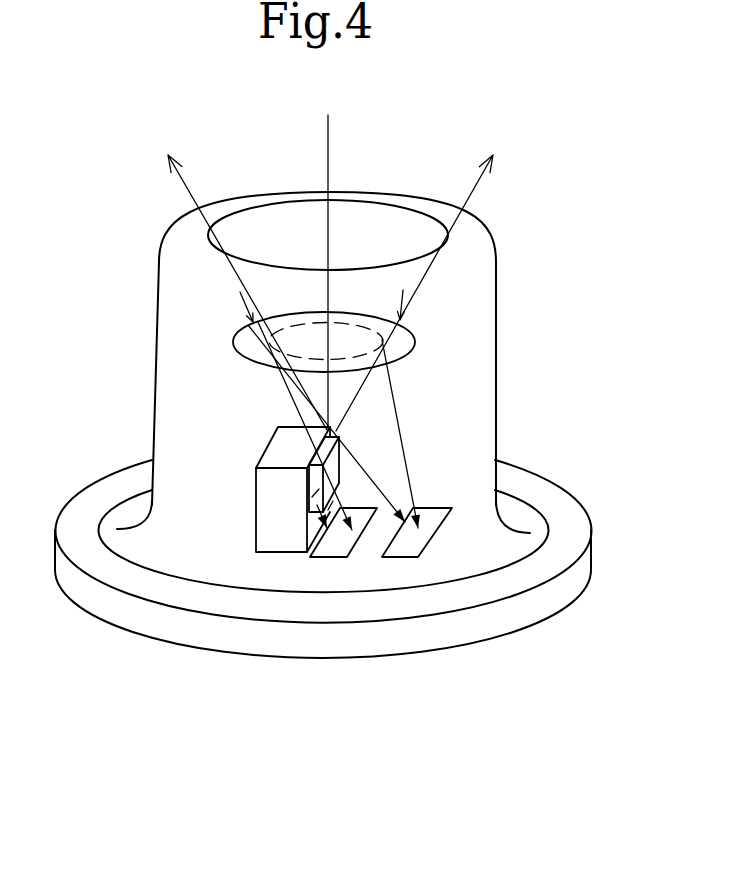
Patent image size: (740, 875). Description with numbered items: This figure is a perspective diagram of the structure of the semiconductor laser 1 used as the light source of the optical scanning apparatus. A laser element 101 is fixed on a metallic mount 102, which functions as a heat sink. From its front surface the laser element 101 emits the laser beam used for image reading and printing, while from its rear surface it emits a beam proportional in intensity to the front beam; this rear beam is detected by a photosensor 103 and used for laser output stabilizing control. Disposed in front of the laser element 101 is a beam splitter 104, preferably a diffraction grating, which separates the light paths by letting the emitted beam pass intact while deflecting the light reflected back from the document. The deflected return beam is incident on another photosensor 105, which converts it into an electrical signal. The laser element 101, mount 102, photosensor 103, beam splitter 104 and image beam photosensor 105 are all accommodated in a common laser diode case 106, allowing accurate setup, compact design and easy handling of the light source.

The semiconductor laser 1 is at (126, 294).
The laser element 101 is at (316, 492).
The metallic mount 102 is at (272, 517).
The photosensor 103 is at (338, 546).
The beam splitter 104 is at (383, 339).
The photosensor 105 is at (408, 548).
The laser diode case 106 is at (487, 397).